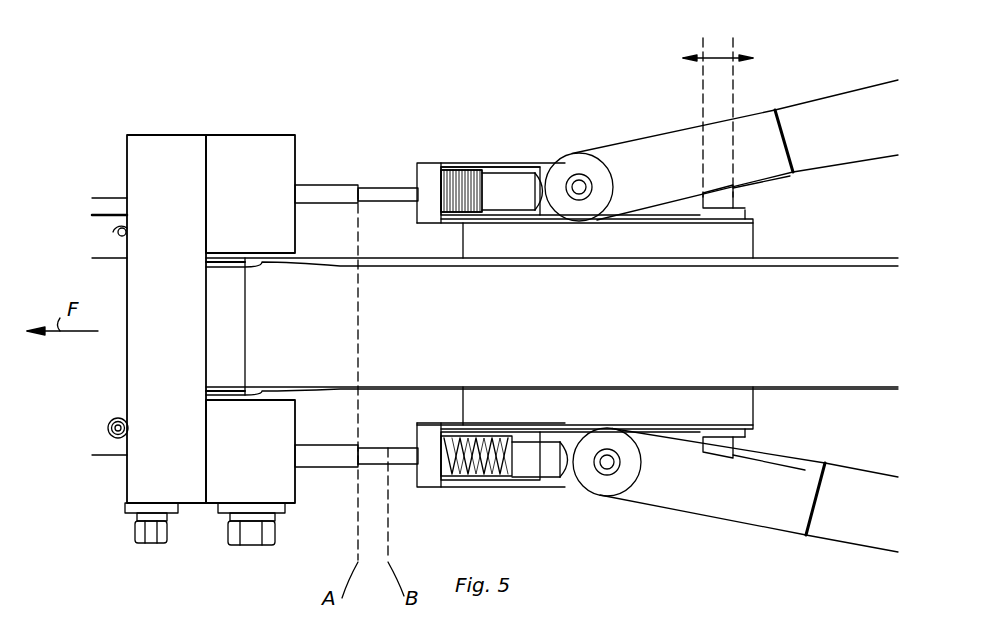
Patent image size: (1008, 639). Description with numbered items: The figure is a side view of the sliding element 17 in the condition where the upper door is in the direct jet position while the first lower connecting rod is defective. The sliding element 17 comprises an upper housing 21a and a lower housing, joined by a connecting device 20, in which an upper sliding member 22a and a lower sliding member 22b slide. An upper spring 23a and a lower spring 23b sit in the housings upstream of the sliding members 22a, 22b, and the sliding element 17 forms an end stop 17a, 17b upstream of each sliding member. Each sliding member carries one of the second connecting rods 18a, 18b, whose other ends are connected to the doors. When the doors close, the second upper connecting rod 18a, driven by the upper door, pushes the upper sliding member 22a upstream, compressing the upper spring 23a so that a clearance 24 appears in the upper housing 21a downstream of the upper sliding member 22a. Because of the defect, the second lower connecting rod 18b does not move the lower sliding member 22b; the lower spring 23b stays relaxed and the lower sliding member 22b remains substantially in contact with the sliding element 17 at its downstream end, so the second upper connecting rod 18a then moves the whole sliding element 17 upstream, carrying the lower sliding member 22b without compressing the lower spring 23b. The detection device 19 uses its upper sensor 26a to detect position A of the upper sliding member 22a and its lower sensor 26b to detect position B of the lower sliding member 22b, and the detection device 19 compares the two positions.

The device for detecting defects 19 is at (227, 123).
The connecting device 20 is at (745, 240).
The upper sensor 26a is at (322, 195).
The lower sensor 26b is at (322, 455).
The sliding element 17 is at (508, 158).
The end stop 17a is at (425, 175).
The end stop 17b is at (430, 467).
The upper housing 21a is at (463, 180).
The upper spring 23a is at (456, 182).
The lower spring 23b is at (472, 468).
The upper sliding member 22a is at (517, 183).
The lower sliding member 22b is at (548, 470).
The second upper connecting rod 18a is at (812, 110).
The second lower connecting rod 18b is at (828, 528).
The clearance 24 is at (713, 62).